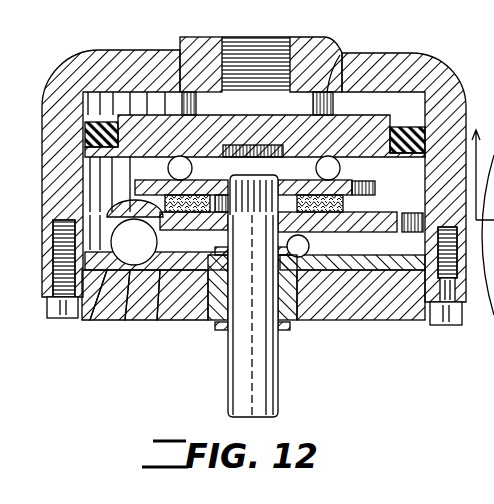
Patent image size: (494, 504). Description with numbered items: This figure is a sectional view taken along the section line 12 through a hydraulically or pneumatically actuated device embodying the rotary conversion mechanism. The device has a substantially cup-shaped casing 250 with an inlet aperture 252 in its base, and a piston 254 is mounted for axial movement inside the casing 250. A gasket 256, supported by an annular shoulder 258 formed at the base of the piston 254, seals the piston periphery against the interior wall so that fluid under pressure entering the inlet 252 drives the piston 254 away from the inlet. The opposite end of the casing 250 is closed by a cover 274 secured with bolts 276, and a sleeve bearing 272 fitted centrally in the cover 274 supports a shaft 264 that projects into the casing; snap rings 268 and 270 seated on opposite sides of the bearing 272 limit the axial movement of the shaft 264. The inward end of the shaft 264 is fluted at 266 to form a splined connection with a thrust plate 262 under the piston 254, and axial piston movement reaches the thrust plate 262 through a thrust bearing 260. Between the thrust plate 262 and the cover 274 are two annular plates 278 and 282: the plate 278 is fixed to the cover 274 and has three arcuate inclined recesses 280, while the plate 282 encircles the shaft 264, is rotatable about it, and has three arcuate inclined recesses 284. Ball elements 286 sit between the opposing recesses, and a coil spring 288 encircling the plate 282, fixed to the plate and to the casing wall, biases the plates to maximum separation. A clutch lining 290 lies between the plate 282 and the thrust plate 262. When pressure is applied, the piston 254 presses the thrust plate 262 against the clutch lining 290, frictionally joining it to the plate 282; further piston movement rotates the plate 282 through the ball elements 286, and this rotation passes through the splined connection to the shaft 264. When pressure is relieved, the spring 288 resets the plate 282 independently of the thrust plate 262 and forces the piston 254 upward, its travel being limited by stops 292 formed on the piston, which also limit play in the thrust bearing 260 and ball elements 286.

The section line 12 is at (482, 215).
The casing 250 is at (420, 68).
The inlet aperture 252 is at (282, 31).
The piston 254 is at (259, 112).
The gasket 256 is at (404, 128).
The annular shoulder 258 is at (416, 158).
The thrust bearing 260 is at (192, 168).
The thrust plate 262 is at (376, 190).
The shaft 264 is at (228, 380).
The fluted end 266 is at (262, 188).
The snap ring 268 is at (216, 328).
The snap ring 270 is at (278, 233).
The sleeve bearing 272 is at (294, 324).
The cover 274 is at (360, 322).
The bolts 276 is at (60, 320).
The annular plate 278 is at (95, 322).
The arcuate inclined recesses 280 is at (125, 322).
The annular plate 282 is at (162, 322).
The arcuate inclined recesses 284 is at (156, 235).
The ball elements 286 is at (322, 248).
The coil spring 288 is at (412, 233).
The clutch lining 290 is at (343, 204).
The stops 292 is at (181, 58).